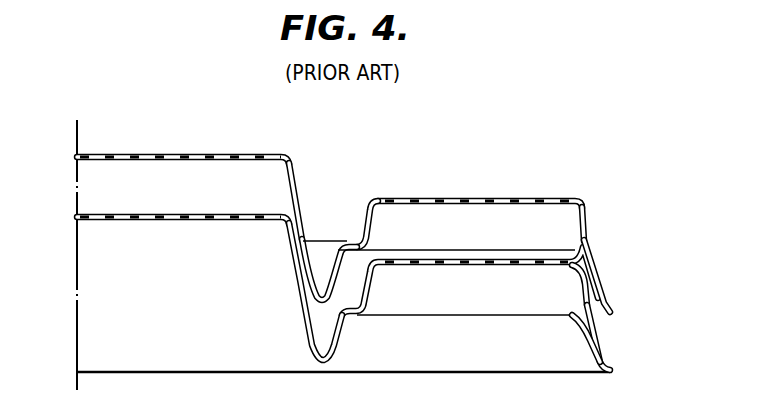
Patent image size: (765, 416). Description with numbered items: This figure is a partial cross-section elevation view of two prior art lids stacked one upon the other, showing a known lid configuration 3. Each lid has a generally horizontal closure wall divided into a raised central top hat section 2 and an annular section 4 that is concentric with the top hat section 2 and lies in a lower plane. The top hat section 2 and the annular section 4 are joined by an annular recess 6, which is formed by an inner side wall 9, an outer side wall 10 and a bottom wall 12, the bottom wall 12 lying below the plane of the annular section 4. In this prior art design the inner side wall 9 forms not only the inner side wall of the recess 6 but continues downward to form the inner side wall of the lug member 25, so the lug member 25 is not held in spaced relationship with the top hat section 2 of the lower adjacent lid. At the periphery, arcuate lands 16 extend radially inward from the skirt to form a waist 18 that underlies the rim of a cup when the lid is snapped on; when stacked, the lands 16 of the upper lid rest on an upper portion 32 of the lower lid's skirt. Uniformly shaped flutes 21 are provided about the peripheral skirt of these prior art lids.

The top hat section 2 is at (183, 153).
The known lid configuration 3 is at (138, 204).
The annular section 4 is at (482, 197).
The annular recess 6 is at (352, 212).
The inner side wall 9 is at (298, 210).
The outer side wall 10 is at (375, 218).
The bottom wall 12 is at (319, 240).
The arcuate lands 16 is at (587, 337).
The waist 18 is at (578, 317).
The flutes 21 is at (596, 257).
The lug member 25 is at (323, 328).
The upper portion 32 is at (583, 212).